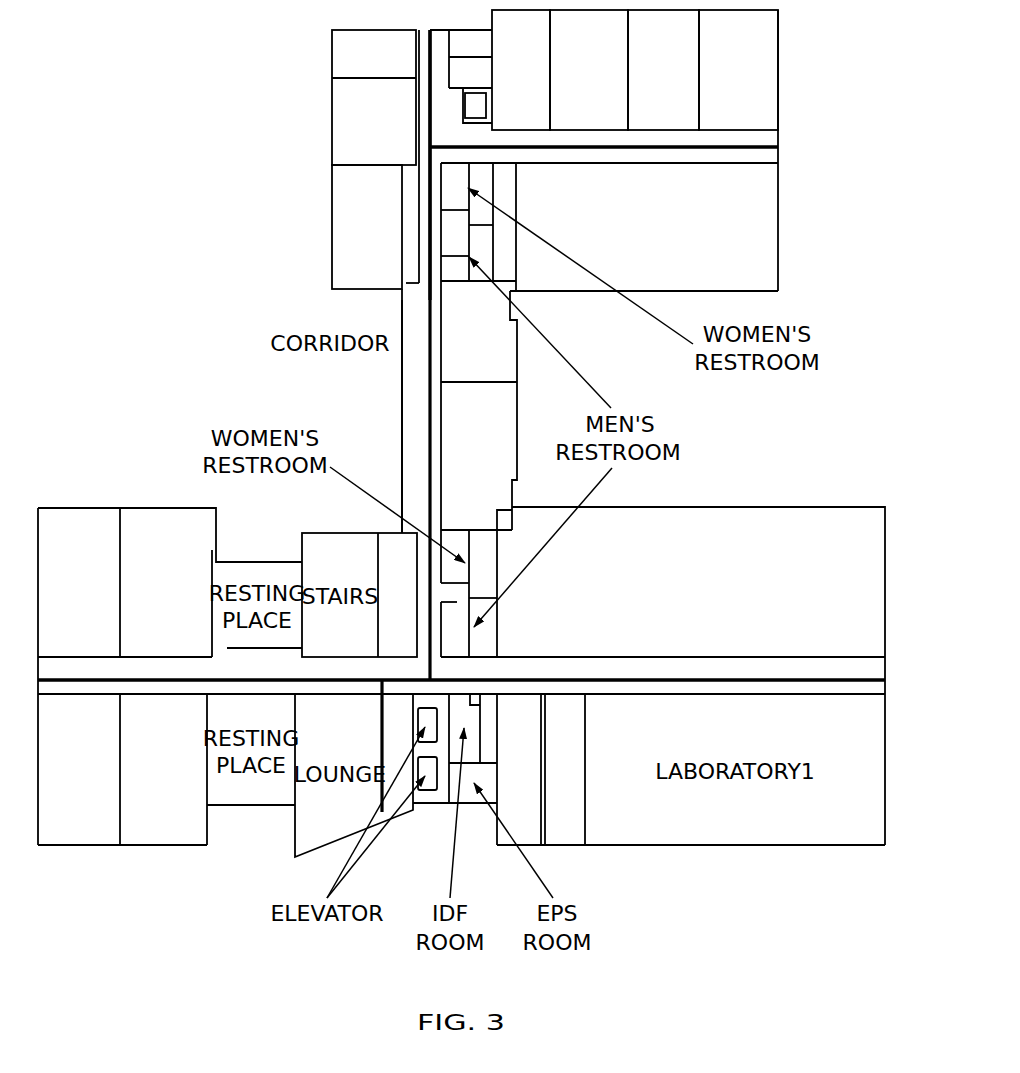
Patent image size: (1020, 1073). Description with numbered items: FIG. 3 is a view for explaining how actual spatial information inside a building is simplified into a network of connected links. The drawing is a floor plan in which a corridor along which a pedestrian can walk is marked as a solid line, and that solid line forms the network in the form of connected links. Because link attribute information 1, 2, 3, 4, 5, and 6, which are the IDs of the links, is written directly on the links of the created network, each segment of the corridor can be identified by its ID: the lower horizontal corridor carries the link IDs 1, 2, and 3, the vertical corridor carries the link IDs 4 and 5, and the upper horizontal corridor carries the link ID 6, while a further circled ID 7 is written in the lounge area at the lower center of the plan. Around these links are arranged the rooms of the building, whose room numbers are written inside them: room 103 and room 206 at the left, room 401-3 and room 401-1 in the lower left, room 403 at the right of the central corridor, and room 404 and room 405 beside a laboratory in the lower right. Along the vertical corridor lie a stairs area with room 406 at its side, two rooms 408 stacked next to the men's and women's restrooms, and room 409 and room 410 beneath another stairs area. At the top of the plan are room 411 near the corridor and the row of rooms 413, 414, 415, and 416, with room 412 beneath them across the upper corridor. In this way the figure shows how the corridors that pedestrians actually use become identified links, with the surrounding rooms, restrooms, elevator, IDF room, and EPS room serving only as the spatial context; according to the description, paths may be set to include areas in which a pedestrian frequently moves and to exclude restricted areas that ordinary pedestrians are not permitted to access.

The room 103 is at (79, 582).
The room 206 is at (166, 582).
The room 401-3 is at (79, 769).
The room 401-1 is at (163, 769).
The room 403 is at (691, 582).
The room 404 is at (519, 769).
The room 405 is at (565, 769).
The room 406 is at (397, 595).
The room 408 is at (479, 405).
The room 409 is at (367, 227).
The room 410 is at (374, 97).
The room 411 is at (470, 59).
The room 412 is at (647, 227).
The room 413 is at (521, 70).
The room 414 is at (589, 70).
The room 415 is at (663, 70).
The room 416 is at (738, 70).
The link attribute information 1 is at (169, 680).
The link attribute information 2 is at (450, 680).
The link attribute information 3 is at (742, 680).
The link attribute information 4 is at (415, 416).
The link attribute information 5 is at (428, 165).
The link attribute information 6 is at (604, 147).
The lounge area 7 is at (354, 775).